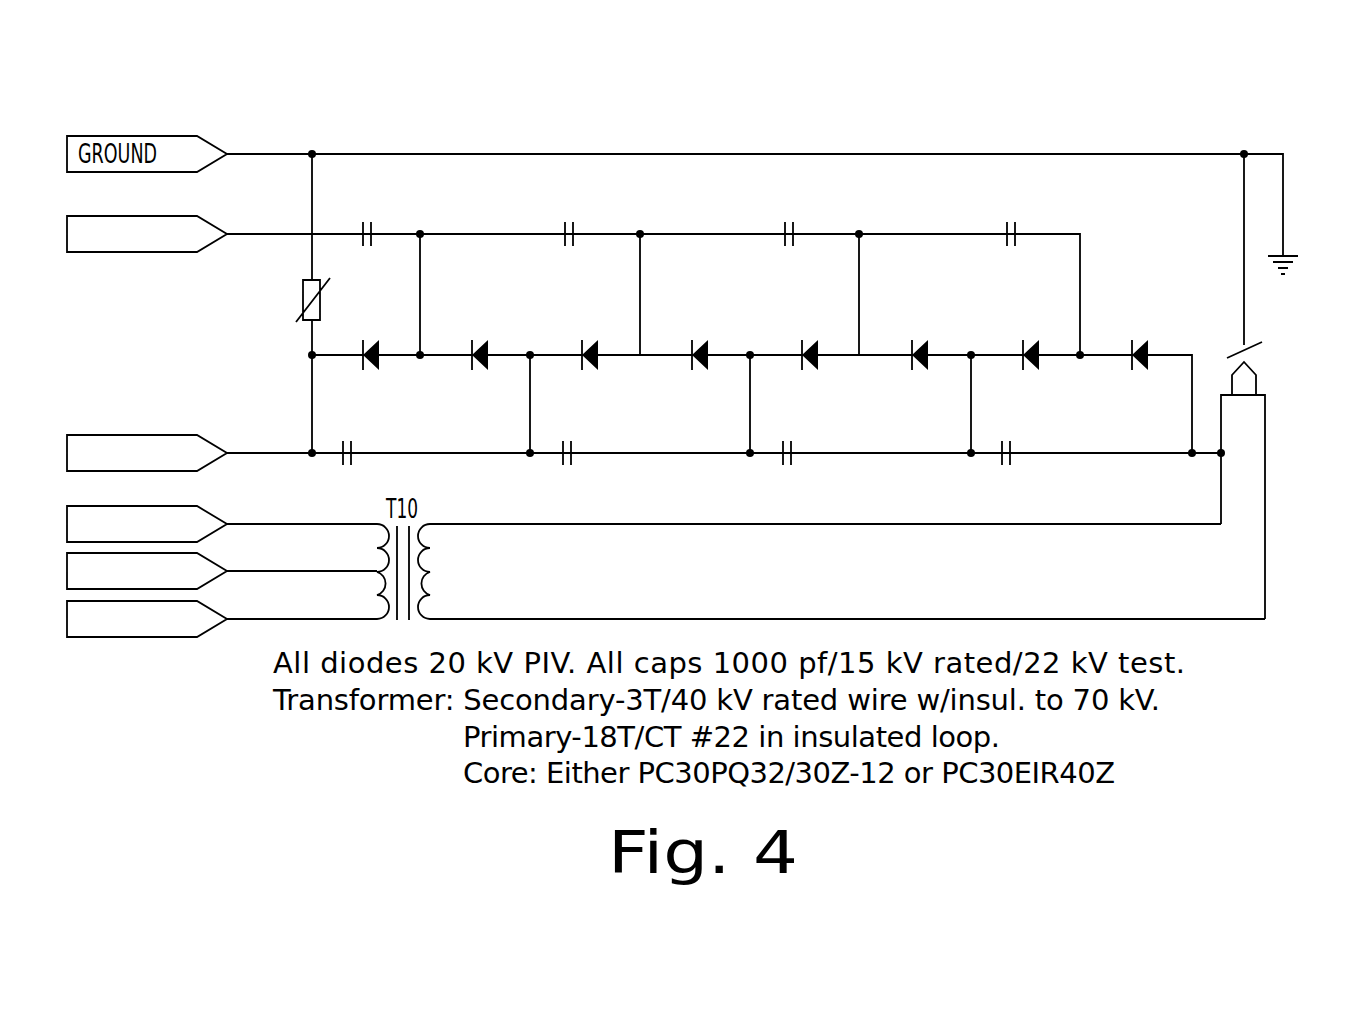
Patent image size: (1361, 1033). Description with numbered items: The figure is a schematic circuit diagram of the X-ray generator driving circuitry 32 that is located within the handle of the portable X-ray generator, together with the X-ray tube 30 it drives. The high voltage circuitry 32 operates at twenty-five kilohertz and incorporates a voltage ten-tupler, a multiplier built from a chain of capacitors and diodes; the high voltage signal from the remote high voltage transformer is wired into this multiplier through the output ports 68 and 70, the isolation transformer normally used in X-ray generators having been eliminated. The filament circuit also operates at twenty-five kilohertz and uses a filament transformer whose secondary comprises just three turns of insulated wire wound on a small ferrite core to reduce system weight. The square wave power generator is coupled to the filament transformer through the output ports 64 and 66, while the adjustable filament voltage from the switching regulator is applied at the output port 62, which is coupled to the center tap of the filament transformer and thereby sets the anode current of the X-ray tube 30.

The X-ray tube 30 is at (1266, 371).
The driving circuitry 32 is at (917, 79).
The output port 62 is at (67, 571).
The output port 64 is at (67, 523).
The output port 66 is at (67, 620).
The output port 68 is at (67, 233).
The output port 70 is at (67, 452).